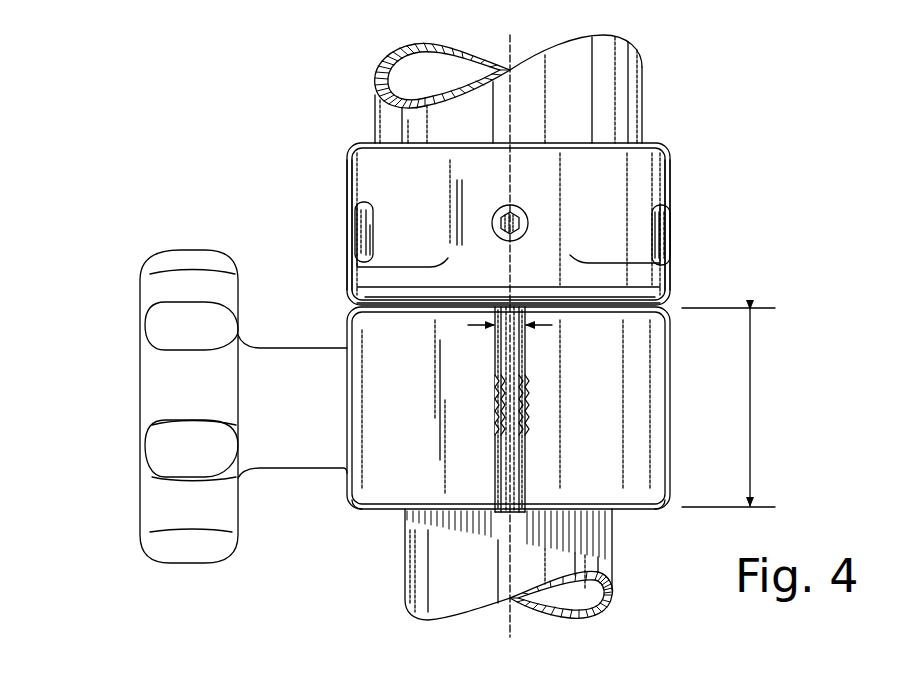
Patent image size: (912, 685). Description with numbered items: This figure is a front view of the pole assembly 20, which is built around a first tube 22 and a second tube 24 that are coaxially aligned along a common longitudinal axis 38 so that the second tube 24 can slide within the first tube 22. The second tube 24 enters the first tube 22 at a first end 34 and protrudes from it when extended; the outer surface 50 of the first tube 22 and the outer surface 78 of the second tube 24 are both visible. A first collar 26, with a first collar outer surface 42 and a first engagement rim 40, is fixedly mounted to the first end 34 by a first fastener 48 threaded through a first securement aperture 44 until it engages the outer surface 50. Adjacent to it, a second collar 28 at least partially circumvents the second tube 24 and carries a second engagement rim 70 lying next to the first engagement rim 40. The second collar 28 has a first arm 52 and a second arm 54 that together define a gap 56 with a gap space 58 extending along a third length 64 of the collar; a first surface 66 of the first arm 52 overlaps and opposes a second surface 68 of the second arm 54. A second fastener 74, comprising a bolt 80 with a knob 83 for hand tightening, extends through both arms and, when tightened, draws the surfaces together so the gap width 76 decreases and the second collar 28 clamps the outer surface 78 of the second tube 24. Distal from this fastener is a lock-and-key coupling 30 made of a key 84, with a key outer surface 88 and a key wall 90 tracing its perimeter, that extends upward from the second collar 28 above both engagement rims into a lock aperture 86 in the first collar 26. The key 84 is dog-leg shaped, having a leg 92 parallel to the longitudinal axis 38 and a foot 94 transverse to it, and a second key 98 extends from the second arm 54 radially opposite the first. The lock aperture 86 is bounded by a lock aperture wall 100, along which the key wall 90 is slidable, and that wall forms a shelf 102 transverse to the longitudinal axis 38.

The pole assembly 20 is at (344, 607).
The first tube 22 is at (636, 100).
The second tube 24 is at (612, 560).
The first collar 26 is at (668, 173).
The second collar 28 is at (672, 396).
The lock-and-key coupling 30 is at (313, 212).
The first end 34 is at (722, 306).
The common longitudinal axis 38 is at (511, 68).
The first engagement rim 40 is at (355, 328).
The first collar outer surface 42 is at (402, 216).
The first securement aperture 44 is at (508, 206).
The first fastener 48 is at (517, 219).
The outer surface of the first tube 50 is at (447, 130).
The first arm 52 is at (357, 506).
The second arm 54 is at (665, 505).
The gap 56 is at (507, 513).
The gap space 58 is at (521, 358).
The third length 64 is at (752, 405).
The first surface 66 is at (496, 353).
The second surface 68 is at (524, 473).
The second engagement rim 70 is at (670, 303).
The second fastener 74 is at (80, 392).
The gap width 76 is at (548, 326).
The outer surface of the second tube 78 is at (448, 603).
The bolt 80 is at (526, 411).
The knob 83 is at (180, 327).
The key 84 is at (350, 263).
The lock aperture 86 is at (368, 203).
The key outer surface 88 is at (373, 210).
The key wall 90 is at (360, 285).
The leg 92 is at (350, 281).
The foot 94 is at (371, 244).
The second key 98 is at (670, 209).
The lock aperture wall 100 is at (352, 207).
The shelf 102 is at (386, 268).